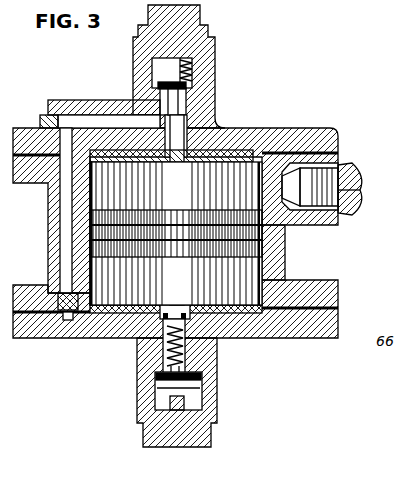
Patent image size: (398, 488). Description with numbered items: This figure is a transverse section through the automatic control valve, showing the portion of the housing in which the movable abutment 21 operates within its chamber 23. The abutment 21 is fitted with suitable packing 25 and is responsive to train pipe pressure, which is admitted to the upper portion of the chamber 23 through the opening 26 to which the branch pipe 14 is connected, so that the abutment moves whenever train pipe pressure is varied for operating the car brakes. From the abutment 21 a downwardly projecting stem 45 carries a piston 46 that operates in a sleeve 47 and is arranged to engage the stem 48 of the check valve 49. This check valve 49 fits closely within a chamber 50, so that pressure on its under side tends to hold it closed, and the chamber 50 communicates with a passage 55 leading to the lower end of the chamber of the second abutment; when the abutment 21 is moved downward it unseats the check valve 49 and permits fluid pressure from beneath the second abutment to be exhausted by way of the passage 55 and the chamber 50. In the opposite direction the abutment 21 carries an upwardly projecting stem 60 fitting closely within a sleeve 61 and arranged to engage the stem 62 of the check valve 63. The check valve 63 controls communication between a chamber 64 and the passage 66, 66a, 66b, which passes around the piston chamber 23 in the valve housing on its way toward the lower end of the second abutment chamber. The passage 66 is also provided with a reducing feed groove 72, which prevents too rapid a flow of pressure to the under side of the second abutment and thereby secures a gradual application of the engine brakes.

The branch pipe 14 is at (352, 172).
The movable abutment 21 is at (262, 237).
The chamber 23 is at (283, 143).
The packing 25 is at (262, 252).
The opening 26 is at (268, 186).
The downwardly projecting stem 45 is at (288, 281).
The piston 46 is at (160, 321).
The sleeve 47 is at (163, 345).
The stem of check valve 48 is at (183, 340).
The check valve 49 is at (202, 380).
The chamber 50 is at (192, 400).
The passage 55 is at (157, 370).
The upwardly projecting stem 60 is at (250, 140).
The sleeve 61 is at (163, 138).
The stem of check valve 62 is at (186, 145).
The check valve 63 is at (186, 85).
The chamber 64 is at (190, 63).
The passage 66 is at (90, 118).
The passage 66a is at (62, 216).
The passage 66b is at (66, 322).
The reducing feed groove 72 is at (60, 290).